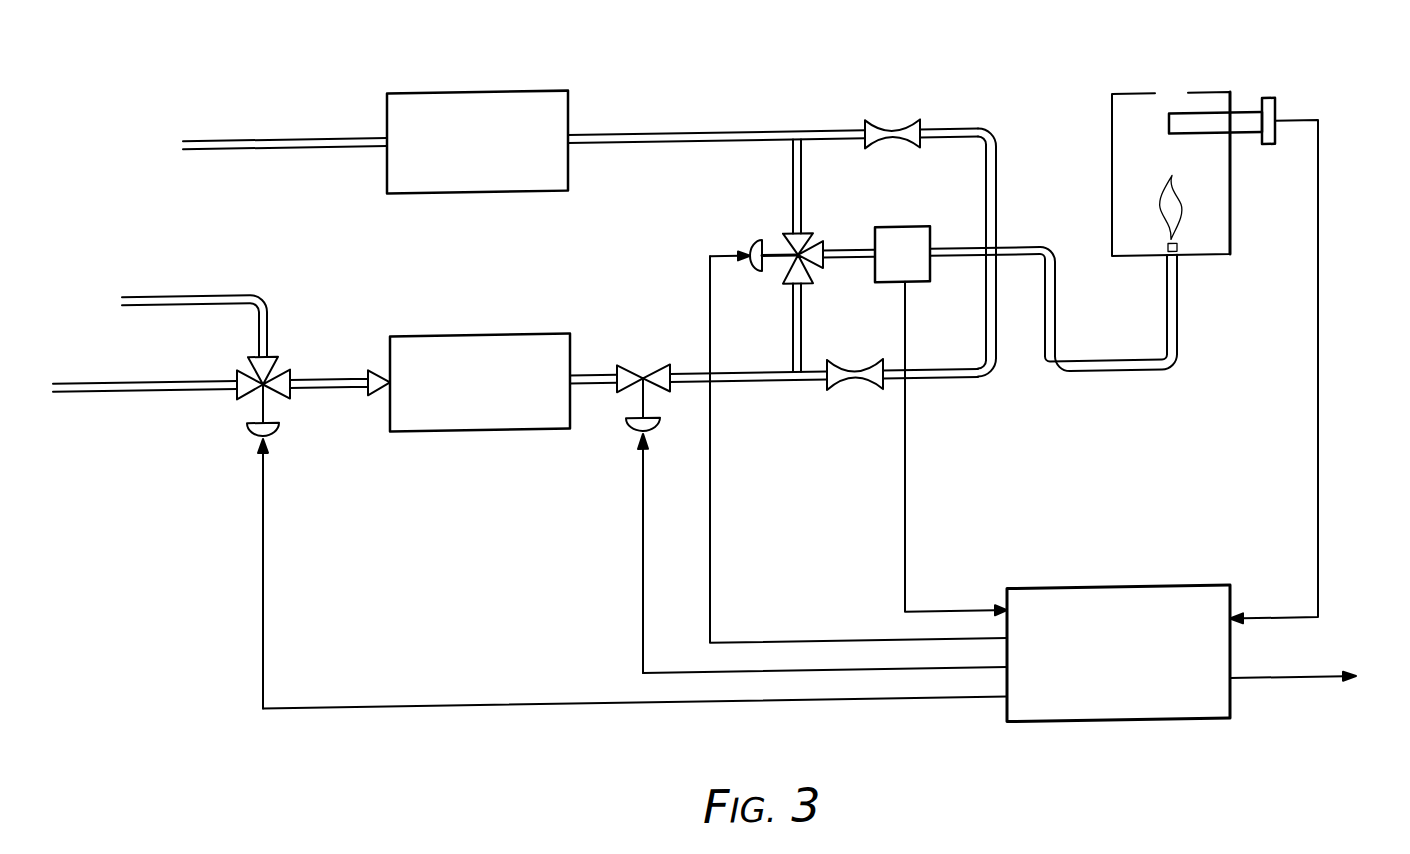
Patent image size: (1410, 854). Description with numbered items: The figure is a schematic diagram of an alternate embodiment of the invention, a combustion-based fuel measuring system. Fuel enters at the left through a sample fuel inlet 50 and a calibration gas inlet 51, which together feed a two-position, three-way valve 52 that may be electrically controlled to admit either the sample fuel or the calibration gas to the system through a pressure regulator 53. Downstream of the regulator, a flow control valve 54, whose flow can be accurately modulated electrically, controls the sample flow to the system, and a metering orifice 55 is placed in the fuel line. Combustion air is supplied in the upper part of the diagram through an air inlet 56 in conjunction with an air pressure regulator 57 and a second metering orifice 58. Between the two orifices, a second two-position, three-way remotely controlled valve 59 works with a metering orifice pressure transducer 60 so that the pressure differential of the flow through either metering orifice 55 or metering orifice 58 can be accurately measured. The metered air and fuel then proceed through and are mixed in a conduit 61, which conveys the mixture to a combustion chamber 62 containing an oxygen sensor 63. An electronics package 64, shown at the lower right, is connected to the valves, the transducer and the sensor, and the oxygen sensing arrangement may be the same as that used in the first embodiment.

The sample fuel inlet 50 is at (231, 288).
The calibration gas inlet 51 is at (222, 384).
The two-position, three-way valve 52 is at (283, 365).
The pressure regulator 53 is at (470, 332).
The flow control valve 54 is at (628, 367).
The metering orifice 55 is at (845, 381).
The air inlet 56 is at (330, 132).
The air pressure regulator 57 is at (472, 88).
The metering orifice 58 is at (880, 133).
The two-position, three-way remotely controlled valve 59 is at (790, 233).
The metering orifice pressure transducer 60 is at (893, 230).
The conduit 61 is at (1110, 378).
The combustion chamber 62 is at (1123, 173).
The oxygen sensor 63 is at (1242, 138).
The electronics package 64 is at (1113, 594).